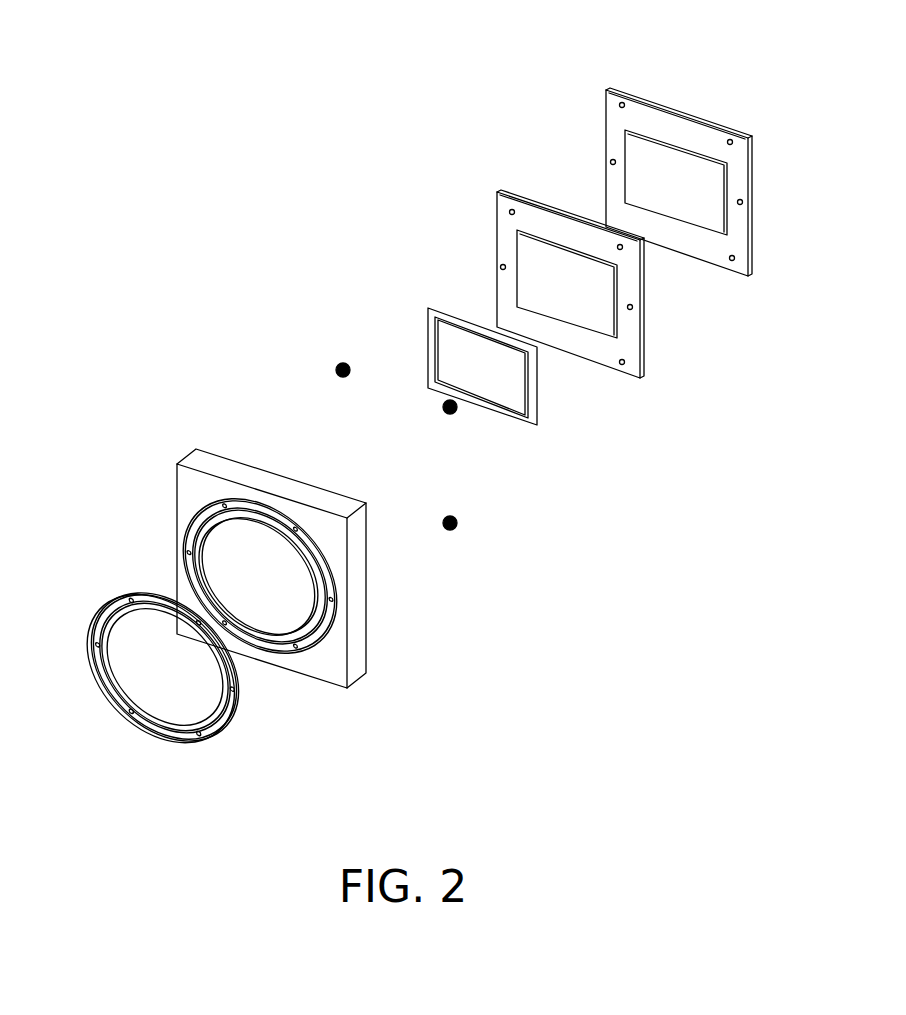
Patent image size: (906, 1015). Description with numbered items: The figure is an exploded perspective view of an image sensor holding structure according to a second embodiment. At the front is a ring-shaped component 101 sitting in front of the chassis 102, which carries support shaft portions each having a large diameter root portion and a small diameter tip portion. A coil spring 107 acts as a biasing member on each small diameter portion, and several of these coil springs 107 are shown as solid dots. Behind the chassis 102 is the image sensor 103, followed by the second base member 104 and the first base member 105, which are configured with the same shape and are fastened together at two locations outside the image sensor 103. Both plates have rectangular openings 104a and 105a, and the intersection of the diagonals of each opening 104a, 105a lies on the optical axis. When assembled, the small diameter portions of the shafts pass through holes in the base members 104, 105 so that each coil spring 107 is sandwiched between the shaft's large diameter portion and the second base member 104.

The decorative ring 101 is at (130, 592).
The chassis 102 is at (196, 449).
The image sensor 103 is at (429, 307).
The second base member 104 is at (497, 192).
The opening 104a is at (578, 322).
The first base member 105 is at (606, 90).
The opening 105a is at (683, 222).
The coil spring 107 is at (341, 367).